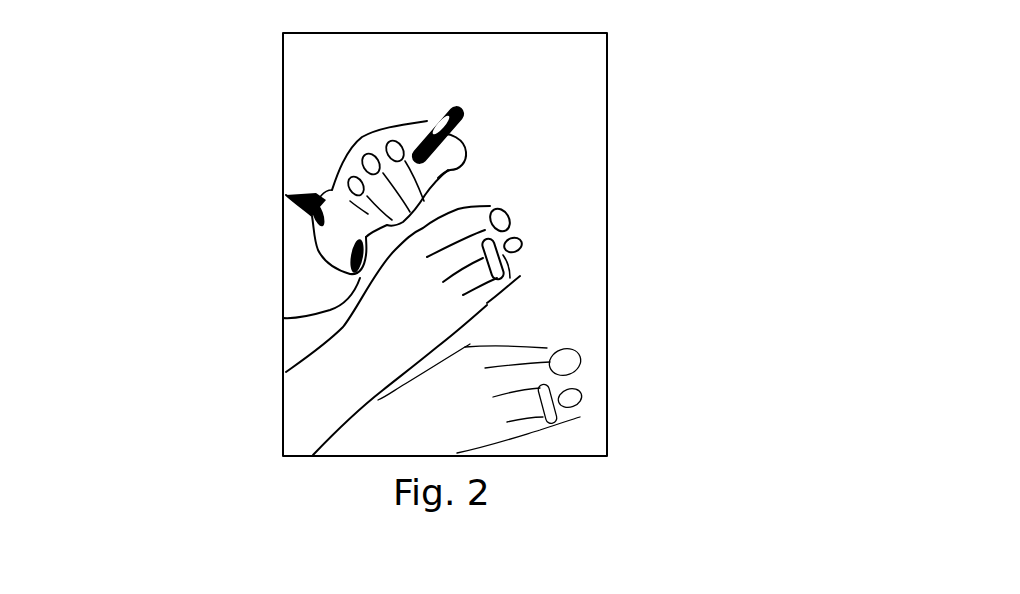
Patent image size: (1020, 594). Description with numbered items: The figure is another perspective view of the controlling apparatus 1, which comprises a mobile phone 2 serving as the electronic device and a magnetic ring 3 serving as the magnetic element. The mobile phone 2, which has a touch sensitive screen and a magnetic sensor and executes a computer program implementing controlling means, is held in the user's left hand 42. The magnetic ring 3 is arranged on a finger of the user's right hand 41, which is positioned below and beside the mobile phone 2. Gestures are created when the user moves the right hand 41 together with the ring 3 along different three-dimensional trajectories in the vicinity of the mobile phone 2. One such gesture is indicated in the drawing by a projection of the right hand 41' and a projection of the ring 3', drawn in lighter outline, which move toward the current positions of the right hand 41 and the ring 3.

The controlling apparatus 1 is at (545, 162).
The mobile phone 2 is at (427, 121).
The left hand 42 is at (343, 192).
The magnetic ring 3 is at (654, 265).
The right hand 41 is at (563, 330).
The projection of the ring 3' is at (685, 407).
The projection of the right hand 41' is at (612, 408).